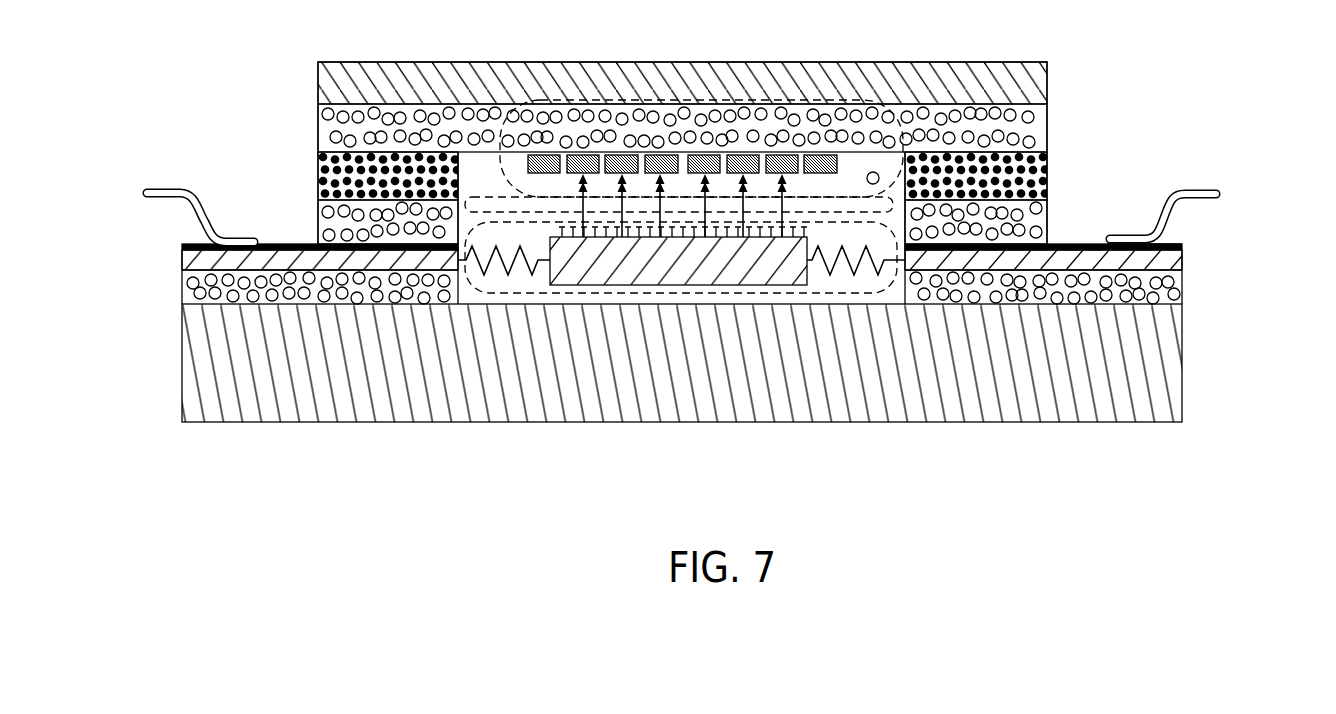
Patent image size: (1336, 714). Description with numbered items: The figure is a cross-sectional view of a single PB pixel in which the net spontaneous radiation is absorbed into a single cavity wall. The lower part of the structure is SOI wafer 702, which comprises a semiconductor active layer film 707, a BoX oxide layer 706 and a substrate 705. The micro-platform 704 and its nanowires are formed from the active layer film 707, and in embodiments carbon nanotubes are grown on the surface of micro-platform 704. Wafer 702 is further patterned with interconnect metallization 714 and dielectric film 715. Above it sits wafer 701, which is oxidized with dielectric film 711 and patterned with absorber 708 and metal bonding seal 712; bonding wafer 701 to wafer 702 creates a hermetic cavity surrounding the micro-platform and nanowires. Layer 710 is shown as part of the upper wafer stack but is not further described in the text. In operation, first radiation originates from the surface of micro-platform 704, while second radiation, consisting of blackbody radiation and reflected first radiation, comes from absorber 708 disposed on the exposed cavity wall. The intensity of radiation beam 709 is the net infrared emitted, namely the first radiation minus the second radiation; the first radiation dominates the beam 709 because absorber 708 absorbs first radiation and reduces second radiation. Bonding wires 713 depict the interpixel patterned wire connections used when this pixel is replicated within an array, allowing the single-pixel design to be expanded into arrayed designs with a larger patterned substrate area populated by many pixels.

The wafer 701 is at (316, 62).
The SOI wafer 702 is at (160, 248).
The micro-platform 704 is at (898, 118).
The substrate 705 is at (1183, 345).
The BoX oxide layer 706 is at (1183, 289).
The semiconductor active layer film 707 is at (1183, 259).
The absorber 708 is at (678, 100).
The radiation beam 709 is at (508, 196).
The top layer 710 is at (1047, 82).
The dielectric film 711 is at (1047, 130).
The metal bonding seal 712 is at (1047, 180).
The bonding wires 713 is at (1215, 190).
The interconnect metallization 714 is at (1180, 244).
The dielectric film 715 is at (1047, 230).